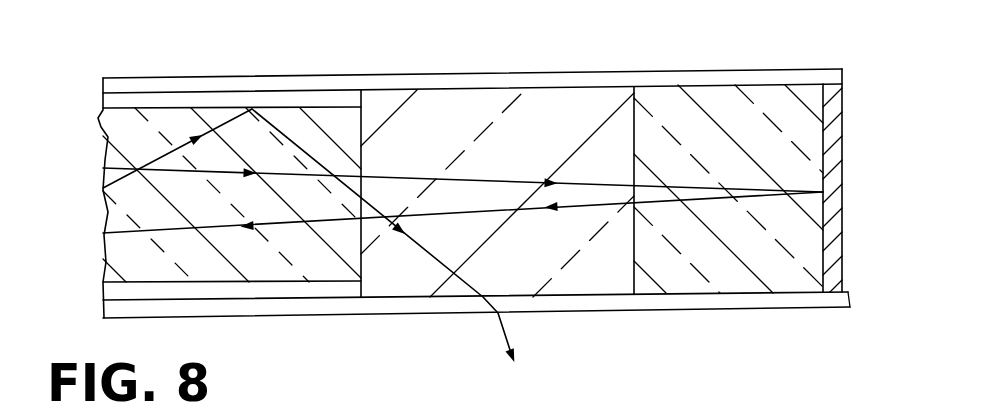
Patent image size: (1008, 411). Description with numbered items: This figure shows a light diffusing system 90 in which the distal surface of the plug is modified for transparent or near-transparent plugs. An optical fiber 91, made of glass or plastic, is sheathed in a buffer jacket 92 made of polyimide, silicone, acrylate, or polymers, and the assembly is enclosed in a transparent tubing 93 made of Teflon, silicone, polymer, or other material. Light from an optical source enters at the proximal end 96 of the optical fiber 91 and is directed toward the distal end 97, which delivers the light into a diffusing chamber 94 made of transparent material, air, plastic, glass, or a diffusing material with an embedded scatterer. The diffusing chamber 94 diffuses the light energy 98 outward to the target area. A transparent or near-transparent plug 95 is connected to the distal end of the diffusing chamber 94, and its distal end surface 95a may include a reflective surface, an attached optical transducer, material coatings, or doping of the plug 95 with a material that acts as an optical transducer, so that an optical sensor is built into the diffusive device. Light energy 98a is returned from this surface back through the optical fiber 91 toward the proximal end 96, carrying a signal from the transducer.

The system 90 is at (346, 34).
The optical fiber 91 is at (133, 247).
The buffer jacket 92 is at (101, 100).
The transparent tubing 93 is at (428, 72).
The diffusing chamber 94 is at (548, 149).
The plug 95 is at (705, 106).
The distal end surface 95a is at (843, 132).
The proximal end 96 is at (100, 195).
The distal end 97 is at (361, 266).
The light energy 98 is at (494, 323).
The returned light energy 98a is at (528, 212).